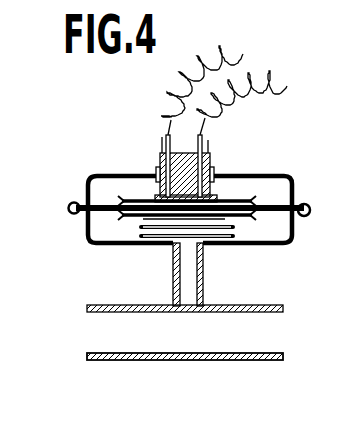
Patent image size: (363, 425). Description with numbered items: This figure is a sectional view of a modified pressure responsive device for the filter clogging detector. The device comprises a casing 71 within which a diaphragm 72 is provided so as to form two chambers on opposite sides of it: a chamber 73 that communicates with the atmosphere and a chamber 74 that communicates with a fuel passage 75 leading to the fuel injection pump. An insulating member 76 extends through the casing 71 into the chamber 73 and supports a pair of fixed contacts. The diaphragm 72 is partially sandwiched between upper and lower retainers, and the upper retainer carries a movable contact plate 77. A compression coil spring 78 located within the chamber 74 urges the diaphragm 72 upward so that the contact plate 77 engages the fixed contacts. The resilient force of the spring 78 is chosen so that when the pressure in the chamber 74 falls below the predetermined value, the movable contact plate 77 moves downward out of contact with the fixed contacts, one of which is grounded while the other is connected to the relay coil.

The casing 71 is at (262, 175).
The diaphragm 72 is at (276, 206).
The chamber 73 is at (100, 178).
The chamber 74 is at (123, 230).
The fuel passage 75 is at (199, 360).
The insulating member 76 is at (214, 177).
The movable contact plate 77 is at (158, 181).
The compression coil spring 78 is at (233, 232).